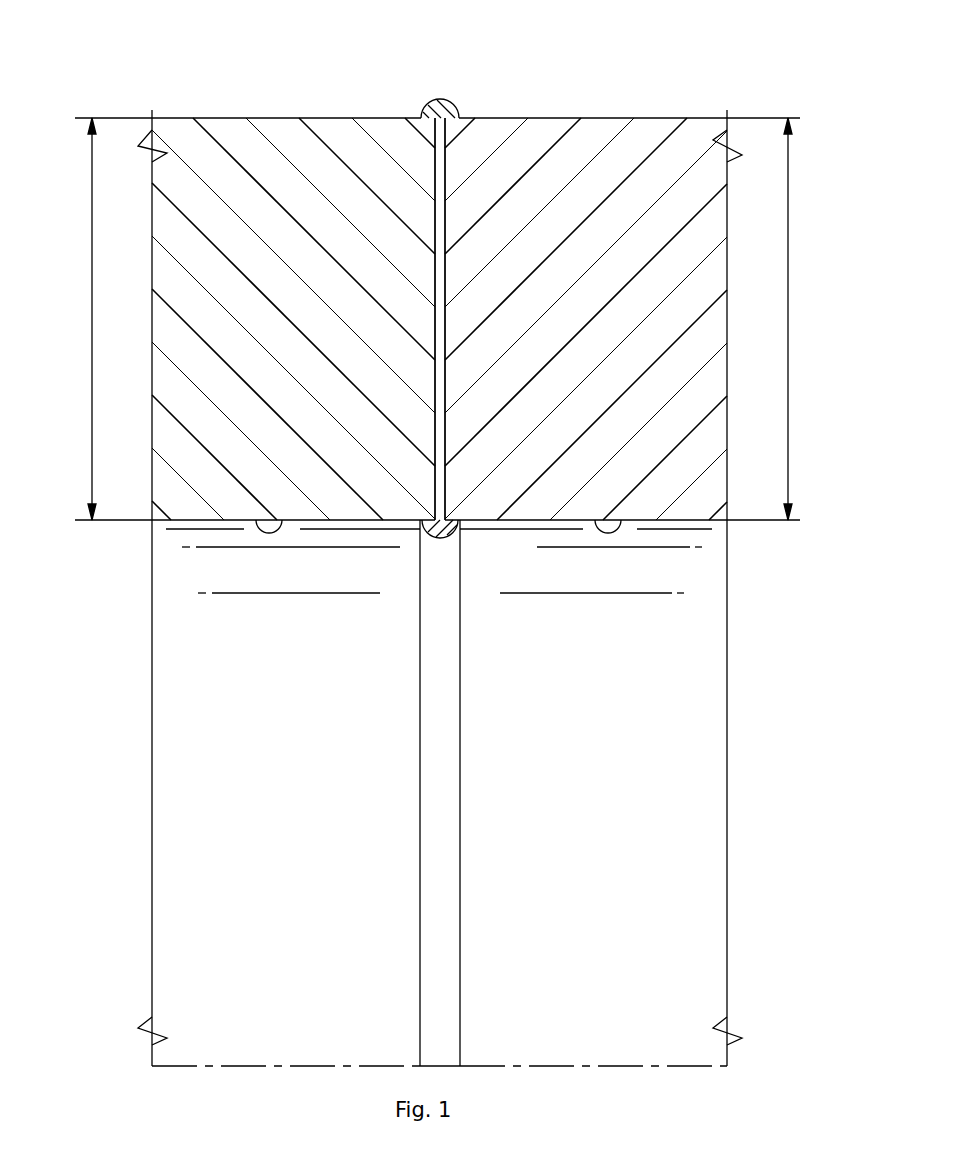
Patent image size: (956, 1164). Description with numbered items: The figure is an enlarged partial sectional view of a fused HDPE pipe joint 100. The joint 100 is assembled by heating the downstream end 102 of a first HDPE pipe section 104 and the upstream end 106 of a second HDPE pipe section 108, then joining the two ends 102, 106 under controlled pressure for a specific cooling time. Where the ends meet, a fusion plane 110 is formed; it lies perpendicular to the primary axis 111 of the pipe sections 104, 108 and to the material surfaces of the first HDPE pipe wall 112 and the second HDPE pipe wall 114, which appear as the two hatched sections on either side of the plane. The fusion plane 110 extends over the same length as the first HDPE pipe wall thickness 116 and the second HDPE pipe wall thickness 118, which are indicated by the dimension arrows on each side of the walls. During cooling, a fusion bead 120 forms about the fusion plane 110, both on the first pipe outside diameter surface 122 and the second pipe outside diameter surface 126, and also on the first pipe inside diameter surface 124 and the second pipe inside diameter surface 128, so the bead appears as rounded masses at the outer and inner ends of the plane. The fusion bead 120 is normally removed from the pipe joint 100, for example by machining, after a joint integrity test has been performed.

The fused HDPE pipe joint 100 is at (432, 82).
The downstream end 102 is at (435, 394).
The first HDPE pipe section 104 is at (224, 128).
The upstream end 106 is at (445, 232).
The second HDPE pipe section 108 is at (655, 126).
The fusion plane 110 is at (440, 288).
The primary axis 111 is at (645, 1068).
The first HDPE pipe wall 112 is at (286, 334).
The second HDPE pipe wall 114 is at (632, 334).
The first HDPE pipe wall thickness 116 is at (92, 313).
The second HDPE pipe wall thickness 118 is at (788, 313).
The fusion bead 120 is at (440, 538).
The first pipe outside diameter surface 122 is at (332, 118).
The first pipe inside diameter surface 124 is at (272, 520).
The second pipe outside diameter surface 126 is at (553, 118).
The second pipe inside diameter surface 128 is at (612, 520).